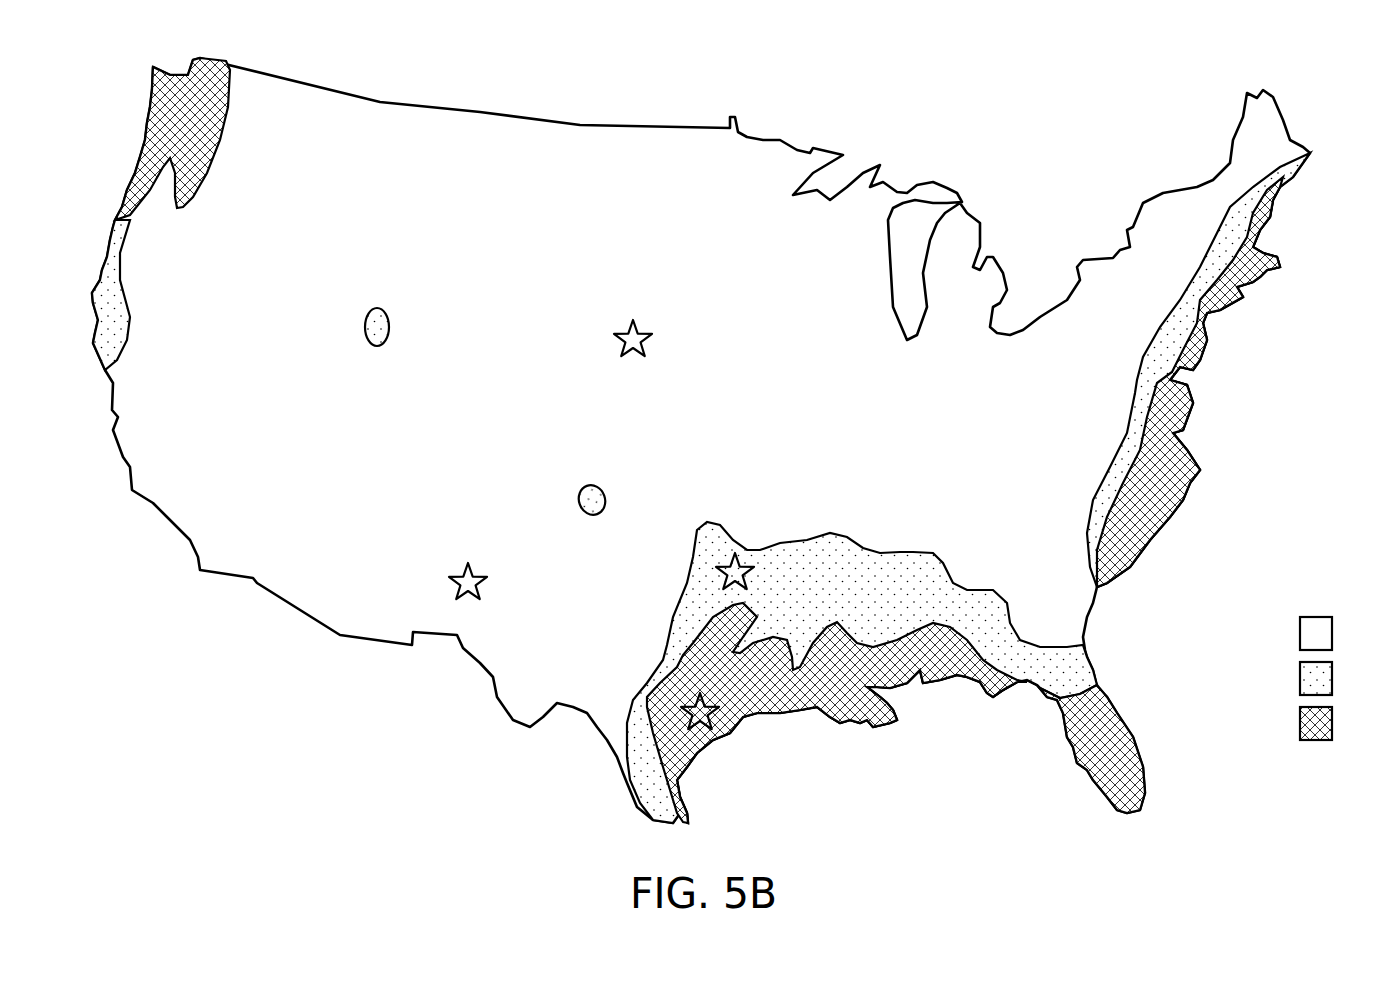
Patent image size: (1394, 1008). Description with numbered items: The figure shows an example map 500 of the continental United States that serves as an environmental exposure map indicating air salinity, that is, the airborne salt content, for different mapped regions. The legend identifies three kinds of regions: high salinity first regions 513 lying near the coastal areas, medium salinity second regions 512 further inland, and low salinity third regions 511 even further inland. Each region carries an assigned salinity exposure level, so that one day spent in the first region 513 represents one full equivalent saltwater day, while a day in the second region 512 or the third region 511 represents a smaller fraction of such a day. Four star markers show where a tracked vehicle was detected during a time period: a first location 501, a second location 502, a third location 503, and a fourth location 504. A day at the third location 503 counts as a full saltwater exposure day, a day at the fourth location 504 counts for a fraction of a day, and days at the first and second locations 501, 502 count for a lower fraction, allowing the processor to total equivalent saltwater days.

The map 500 is at (1085, 113).
The first location 501 is at (460, 572).
The second location 502 is at (627, 327).
The third location 503 is at (713, 723).
The fourth location 504 is at (747, 557).
The third region 511 is at (1298, 633).
The second region 512 is at (1298, 678).
The first region 513 is at (1298, 722).